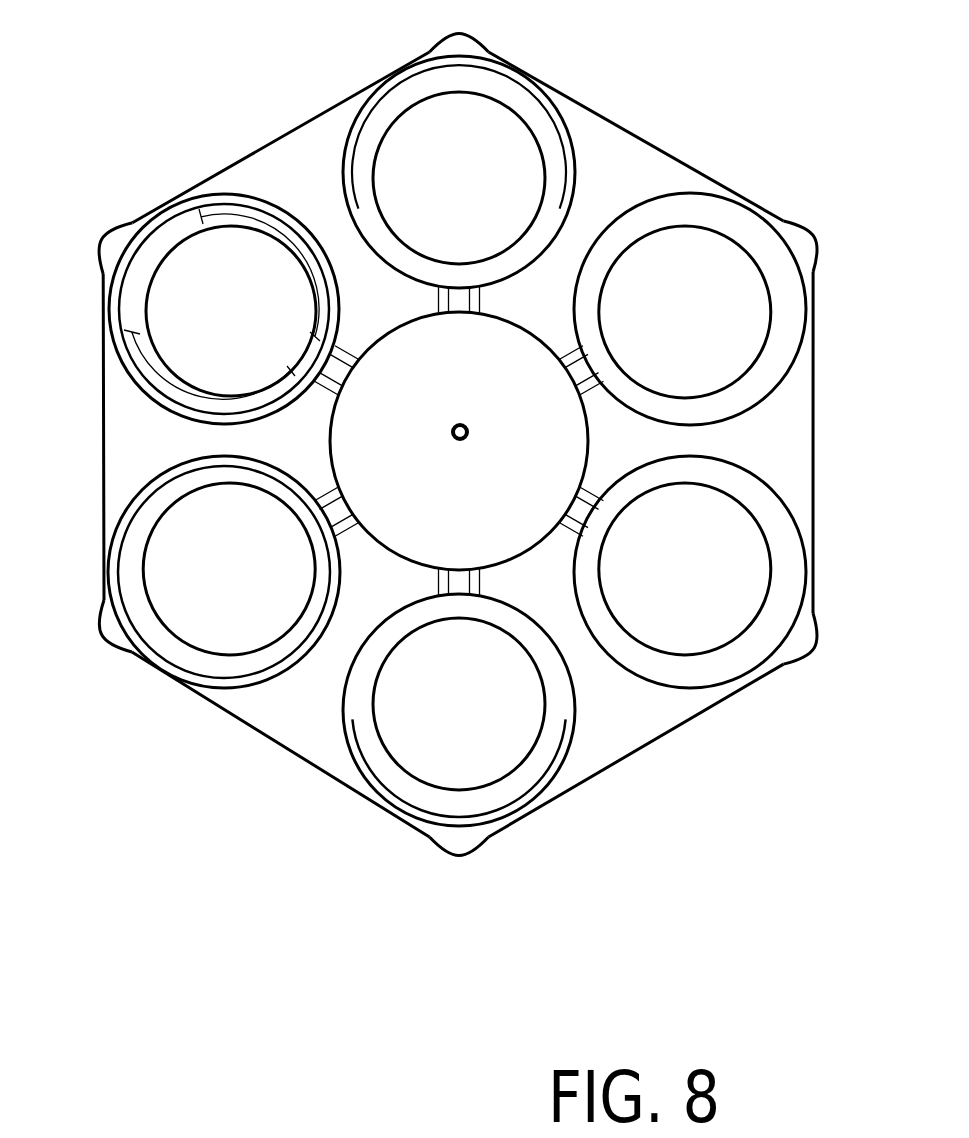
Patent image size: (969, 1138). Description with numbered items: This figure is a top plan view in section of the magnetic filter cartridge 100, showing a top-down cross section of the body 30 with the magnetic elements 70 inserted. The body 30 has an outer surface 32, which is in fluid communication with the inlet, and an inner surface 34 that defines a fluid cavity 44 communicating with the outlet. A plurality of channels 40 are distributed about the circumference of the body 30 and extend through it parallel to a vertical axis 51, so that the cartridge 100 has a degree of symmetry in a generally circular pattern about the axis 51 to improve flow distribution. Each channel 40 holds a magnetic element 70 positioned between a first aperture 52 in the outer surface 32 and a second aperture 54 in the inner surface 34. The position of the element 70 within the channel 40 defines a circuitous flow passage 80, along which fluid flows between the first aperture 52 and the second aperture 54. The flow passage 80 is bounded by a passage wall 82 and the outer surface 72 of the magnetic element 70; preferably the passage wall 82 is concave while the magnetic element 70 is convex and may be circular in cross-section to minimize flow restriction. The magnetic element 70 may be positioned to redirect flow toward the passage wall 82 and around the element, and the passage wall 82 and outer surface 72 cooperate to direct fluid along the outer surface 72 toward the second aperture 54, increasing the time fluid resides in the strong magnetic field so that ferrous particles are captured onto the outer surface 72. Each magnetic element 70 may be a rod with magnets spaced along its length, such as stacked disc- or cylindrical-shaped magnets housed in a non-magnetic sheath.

The magnetic filter cartridge 100 is at (740, 103).
The body 30 is at (322, 765).
The outer surface 32 is at (563, 94).
The inner surface 34 is at (385, 560).
The channels 40 is at (475, 466).
The fluid cavity 44 is at (392, 397).
The vertical axis 51 is at (470, 427).
The first aperture 52 is at (783, 225).
The second aperture 54 is at (368, 343).
The magnetic element 70 is at (438, 461).
The outer surface of magnetic element 72 is at (538, 740).
The flow passage 80 is at (233, 669).
The passage wall 82 is at (567, 743).